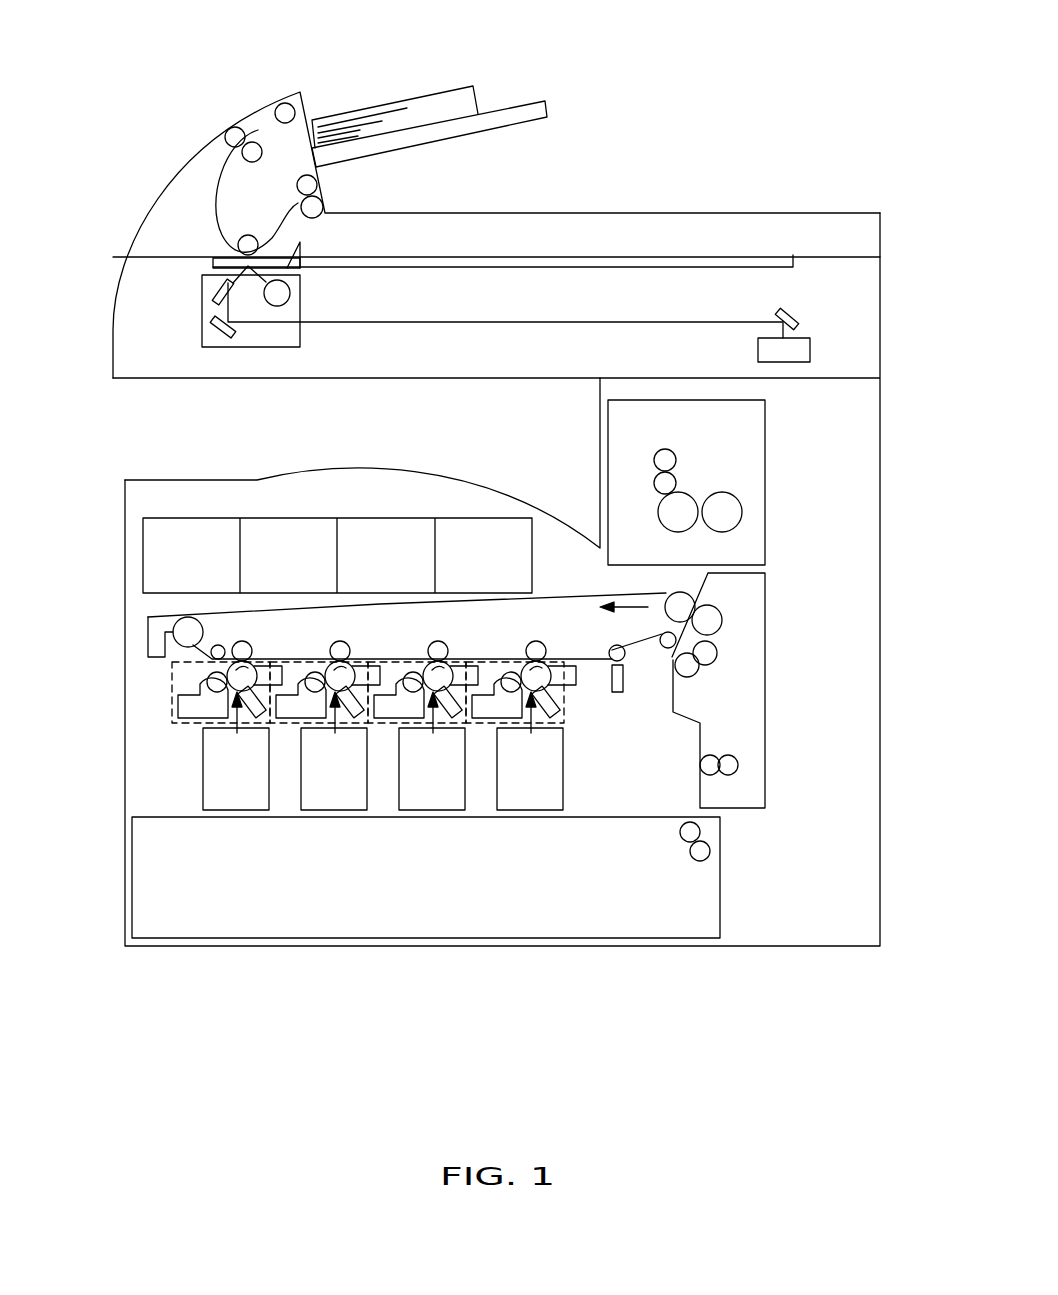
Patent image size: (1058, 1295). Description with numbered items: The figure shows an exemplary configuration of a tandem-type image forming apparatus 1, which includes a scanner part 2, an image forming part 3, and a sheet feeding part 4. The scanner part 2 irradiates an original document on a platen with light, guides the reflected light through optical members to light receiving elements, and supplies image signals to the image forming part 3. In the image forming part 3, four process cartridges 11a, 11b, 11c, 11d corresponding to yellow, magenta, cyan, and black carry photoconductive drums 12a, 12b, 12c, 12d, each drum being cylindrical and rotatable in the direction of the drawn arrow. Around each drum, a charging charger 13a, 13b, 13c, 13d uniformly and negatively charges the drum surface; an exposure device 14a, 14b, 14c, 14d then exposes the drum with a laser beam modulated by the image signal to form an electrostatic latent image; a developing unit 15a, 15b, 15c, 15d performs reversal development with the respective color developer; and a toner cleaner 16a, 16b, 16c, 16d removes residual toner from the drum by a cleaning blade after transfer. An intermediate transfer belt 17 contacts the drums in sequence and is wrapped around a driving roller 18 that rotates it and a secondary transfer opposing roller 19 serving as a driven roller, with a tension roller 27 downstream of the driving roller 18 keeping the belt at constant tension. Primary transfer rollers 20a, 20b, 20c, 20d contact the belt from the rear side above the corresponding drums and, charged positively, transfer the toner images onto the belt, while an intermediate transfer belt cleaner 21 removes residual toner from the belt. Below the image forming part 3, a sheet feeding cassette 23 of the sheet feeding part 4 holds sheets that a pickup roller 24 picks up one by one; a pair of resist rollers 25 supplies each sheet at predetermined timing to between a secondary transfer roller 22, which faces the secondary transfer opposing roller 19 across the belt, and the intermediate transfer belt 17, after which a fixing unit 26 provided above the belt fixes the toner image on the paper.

The image forming apparatus 1 is at (733, 78).
The scanner part 2 is at (889, 85).
The image forming part 3 is at (889, 380).
The sheet feeding part 4 is at (889, 815).
The process cartridge 11a is at (188, 723).
The process cartridge 11b is at (286, 723).
The process cartridge 11c is at (384, 723).
The process cartridge 11d is at (482, 723).
The photoconductive drum 12a is at (255, 664).
The photoconductive drum 12b is at (353, 664).
The photoconductive drum 12c is at (451, 664).
The photoconductive drum 12d is at (549, 664).
The charging charger 13a is at (244, 723).
The charging charger 13b is at (342, 723).
The charging charger 13c is at (440, 723).
The charging charger 13d is at (538, 723).
The exposure device 14a is at (257, 810).
The exposure device 14b is at (355, 810).
The exposure device 14c is at (453, 810).
The exposure device 14d is at (551, 810).
The developing unit 15a is at (218, 720).
The developing unit 15b is at (316, 720).
The developing unit 15c is at (414, 720).
The developing unit 15d is at (512, 720).
The toner cleaner 16a is at (275, 667).
The toner cleaner 16b is at (373, 667).
The toner cleaner 16c is at (471, 667).
The toner cleaner 16d is at (569, 667).
The intermediate transfer belt 17 is at (210, 612).
The driving roller 18 is at (186, 622).
The secondary transfer opposing roller 19 is at (695, 588).
The primary transfer roller 20a is at (239, 641).
The primary transfer roller 20b is at (337, 641).
The primary transfer roller 20c is at (435, 641).
The primary transfer roller 20d is at (533, 641).
The intermediate transfer belt cleaner 21 is at (148, 640).
The secondary transfer roller 22 is at (723, 621).
The sheet feeding cassette 23 is at (722, 886).
The pickup roller 24 is at (712, 840).
The pair of resist rollers 25 is at (718, 650).
The fixing unit 26 is at (766, 452).
The tension roller 27 is at (212, 658).